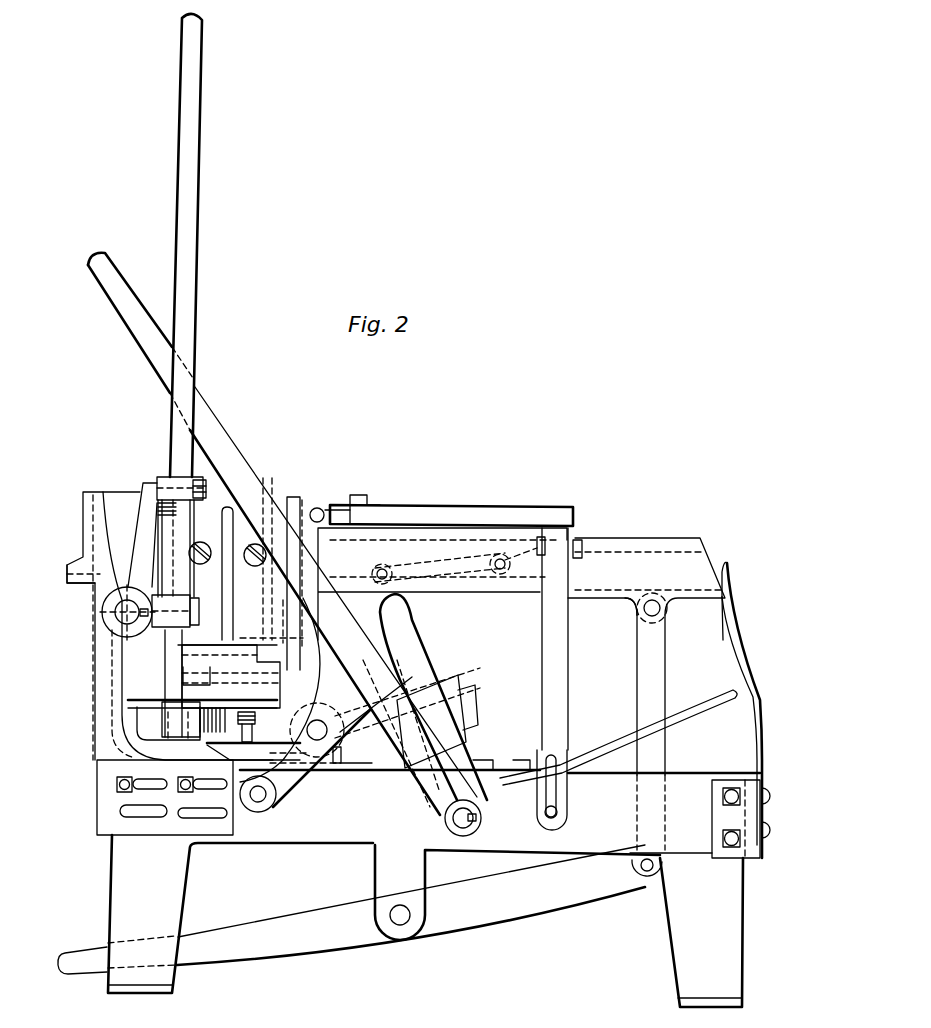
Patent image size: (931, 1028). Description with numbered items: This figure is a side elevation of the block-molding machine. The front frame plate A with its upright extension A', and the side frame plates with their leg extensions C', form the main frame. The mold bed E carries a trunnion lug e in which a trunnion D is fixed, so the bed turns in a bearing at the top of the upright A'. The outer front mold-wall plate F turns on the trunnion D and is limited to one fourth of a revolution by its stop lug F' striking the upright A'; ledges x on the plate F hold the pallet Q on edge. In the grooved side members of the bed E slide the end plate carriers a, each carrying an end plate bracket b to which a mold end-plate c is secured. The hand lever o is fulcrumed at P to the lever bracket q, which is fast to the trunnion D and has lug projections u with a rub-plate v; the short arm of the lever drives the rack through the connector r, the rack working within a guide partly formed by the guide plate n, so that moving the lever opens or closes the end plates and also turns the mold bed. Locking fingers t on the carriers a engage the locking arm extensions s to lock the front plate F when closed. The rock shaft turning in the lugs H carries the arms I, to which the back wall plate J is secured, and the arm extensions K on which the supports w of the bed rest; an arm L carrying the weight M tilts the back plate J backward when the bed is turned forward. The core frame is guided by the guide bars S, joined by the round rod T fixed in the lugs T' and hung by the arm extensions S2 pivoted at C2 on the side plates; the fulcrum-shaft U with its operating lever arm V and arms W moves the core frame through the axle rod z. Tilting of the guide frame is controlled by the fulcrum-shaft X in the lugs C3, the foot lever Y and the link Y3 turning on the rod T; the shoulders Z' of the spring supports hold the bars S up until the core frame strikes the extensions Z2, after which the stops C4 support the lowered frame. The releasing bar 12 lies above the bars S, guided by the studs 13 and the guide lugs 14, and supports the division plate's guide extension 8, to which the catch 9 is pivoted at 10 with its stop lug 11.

The fulcrum P is at (187, 498).
The end plate bracket b is at (222, 476).
The ledges x is at (222, 507).
The lever bracket q is at (153, 480).
The pallet Q is at (110, 505).
The outer front mold-wall plate F is at (99, 626).
The stop lug F' is at (65, 580).
The trunnion D is at (122, 605).
The hand lever o is at (178, 538).
The lug projections u is at (168, 609).
The rub-plate v is at (199, 607).
The mold end-plates c is at (280, 592).
The back wall plate J is at (295, 505).
The pivot 10 is at (315, 508).
The catch 9 is at (335, 510).
The stop lug 11 is at (356, 496).
The guide extension 8 is at (498, 508).
The guide lugs 14 is at (580, 548).
The arms I is at (318, 553).
The guide bars S is at (530, 580).
The arms W is at (412, 632).
The weight M is at (460, 684).
The releasing bar 12 is at (540, 652).
The guide studs 13 is at (567, 812).
The extension Z2 is at (729, 569).
The lugs T' is at (614, 618).
The round rod T is at (666, 614).
The shoulders Z' is at (713, 624).
The links Y3 is at (642, 673).
The stops C4 is at (618, 734).
The axle rod z is at (757, 738).
The mold bed E is at (273, 675).
The arm L is at (348, 740).
The upright extensions A' is at (95, 694).
The locking arm extension s is at (137, 652).
The trunnion lug e is at (177, 660).
The end plate carriers a is at (250, 663).
The locking finger extension t is at (175, 680).
The supports w is at (260, 727).
The guide plate n is at (137, 737).
The connector r is at (181, 731).
The lateral arm extension K is at (230, 755).
The arm extensions S2 is at (332, 765).
The lugs H is at (336, 767).
The operating lever arm V is at (425, 763).
The fulcrum-shaft U is at (467, 815).
The pivot C2 is at (262, 797).
The lugs C3 is at (387, 873).
The foot lever Y is at (351, 909).
The fulcrum-shaft X is at (400, 920).
The leg extensions C' is at (425, 921).
The front frame plate A is at (144, 797).